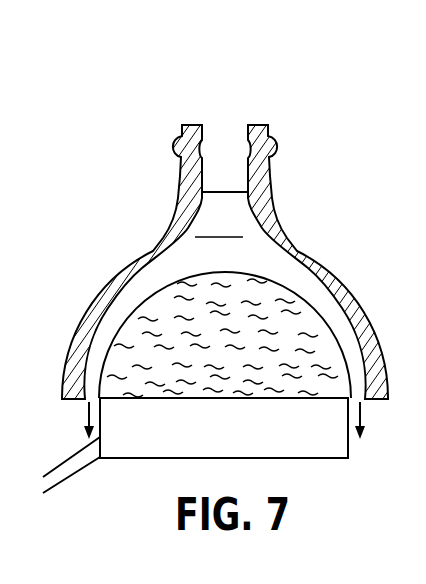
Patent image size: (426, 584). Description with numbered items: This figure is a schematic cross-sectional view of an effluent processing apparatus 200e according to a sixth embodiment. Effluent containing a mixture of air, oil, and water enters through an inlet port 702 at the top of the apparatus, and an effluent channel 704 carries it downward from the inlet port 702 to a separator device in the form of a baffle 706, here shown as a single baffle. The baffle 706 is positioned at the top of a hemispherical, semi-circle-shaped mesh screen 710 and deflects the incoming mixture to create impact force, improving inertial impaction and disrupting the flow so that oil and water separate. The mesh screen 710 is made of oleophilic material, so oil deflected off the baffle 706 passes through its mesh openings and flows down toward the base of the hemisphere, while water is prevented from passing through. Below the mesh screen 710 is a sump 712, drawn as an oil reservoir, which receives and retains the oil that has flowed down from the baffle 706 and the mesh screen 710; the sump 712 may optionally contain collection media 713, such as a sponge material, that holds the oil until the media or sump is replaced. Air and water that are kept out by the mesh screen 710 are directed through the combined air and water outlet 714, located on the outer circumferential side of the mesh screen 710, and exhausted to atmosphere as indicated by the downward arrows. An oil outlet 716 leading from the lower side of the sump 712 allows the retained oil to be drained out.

The effluent processing apparatus 200e is at (318, 98).
The inlet port 702 is at (225, 127).
The effluent channel 704 is at (225, 179).
The baffle 706 is at (243, 237).
The mesh screen 710 is at (313, 293).
The sump 712 is at (145, 400).
The collection media 713 is at (333, 378).
The combined air and water outlet 714 is at (86, 383).
The oil outlet 716 is at (53, 483).